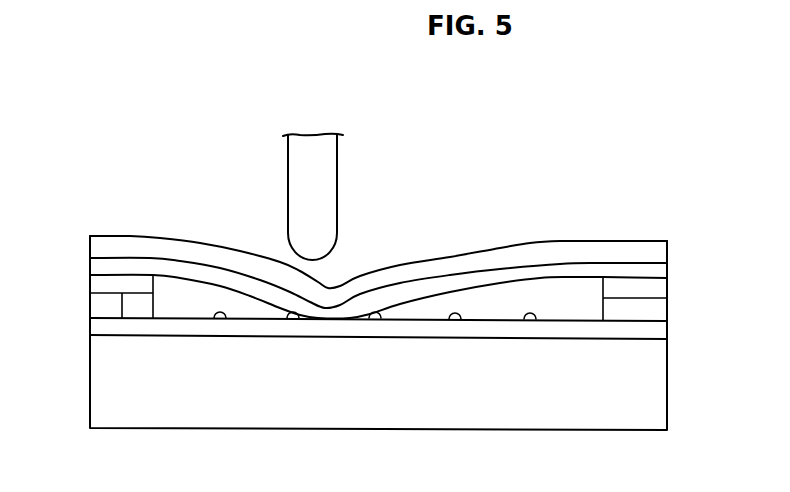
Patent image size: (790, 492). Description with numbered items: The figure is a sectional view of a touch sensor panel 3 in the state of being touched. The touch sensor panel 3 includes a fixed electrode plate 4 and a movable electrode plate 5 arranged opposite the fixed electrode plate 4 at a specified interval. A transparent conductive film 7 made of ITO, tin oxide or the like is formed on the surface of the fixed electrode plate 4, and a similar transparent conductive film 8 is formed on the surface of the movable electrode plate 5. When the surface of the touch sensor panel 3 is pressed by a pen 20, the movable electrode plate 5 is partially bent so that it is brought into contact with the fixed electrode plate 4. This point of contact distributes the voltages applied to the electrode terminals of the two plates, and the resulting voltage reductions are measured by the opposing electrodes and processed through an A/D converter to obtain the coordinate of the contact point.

The touch sensor panel 3 is at (74, 321).
The fixed electrode plate 4 is at (652, 390).
The movable electrode plate 5 is at (658, 253).
The transparent conductive film 7 is at (658, 332).
The transparent conductive film 8 is at (100, 266).
The pen 20 is at (323, 195).